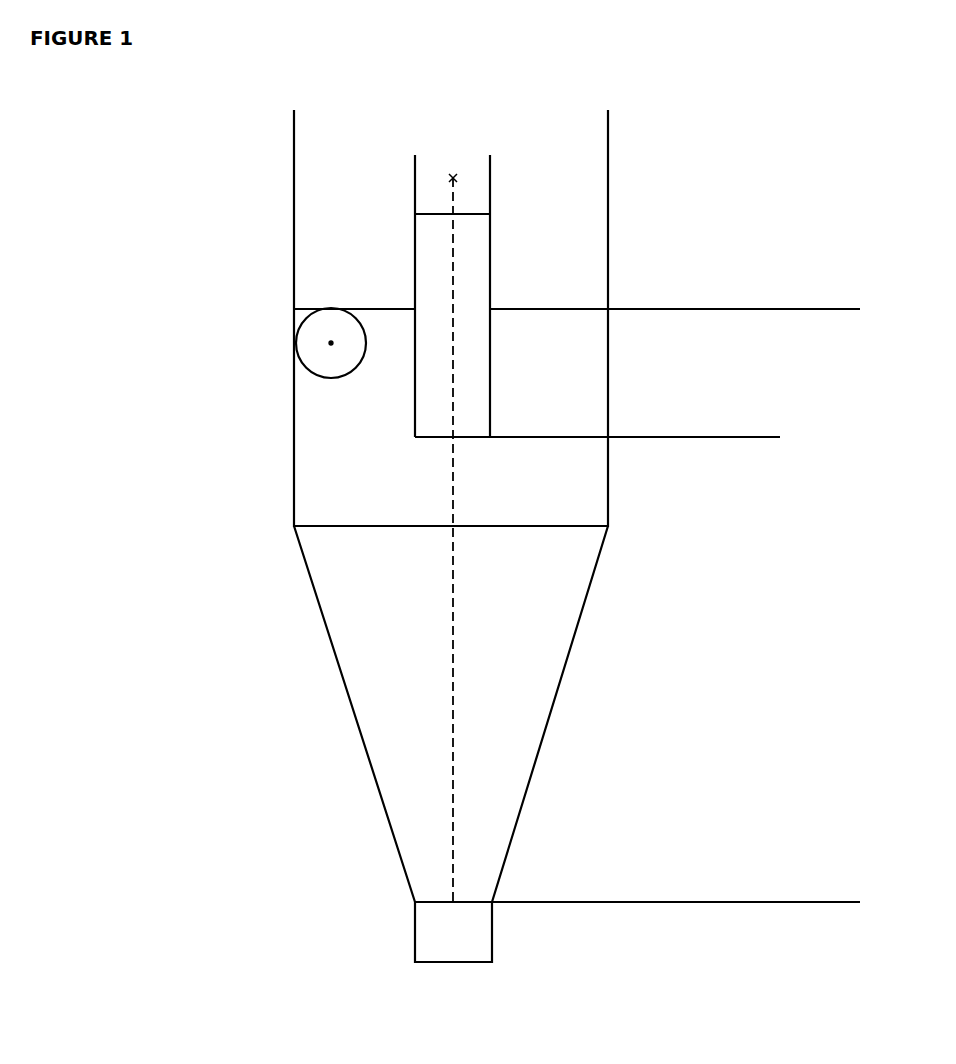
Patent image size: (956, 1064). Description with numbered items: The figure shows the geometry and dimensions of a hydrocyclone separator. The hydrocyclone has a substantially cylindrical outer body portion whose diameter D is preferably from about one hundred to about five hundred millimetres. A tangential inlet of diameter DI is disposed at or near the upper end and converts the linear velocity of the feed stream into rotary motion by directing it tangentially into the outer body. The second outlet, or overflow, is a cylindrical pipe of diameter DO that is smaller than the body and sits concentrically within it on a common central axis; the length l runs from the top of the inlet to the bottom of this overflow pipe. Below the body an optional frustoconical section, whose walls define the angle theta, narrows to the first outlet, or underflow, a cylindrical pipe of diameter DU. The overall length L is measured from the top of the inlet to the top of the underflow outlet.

The diameter of the outer body portion D is at (294, 110).
The diameter of the second outlet (overflow) DO is at (490, 155).
The diameter of the inlet DI is at (318, 340).
The length from top of inlet to bottom of second outlet l is at (780, 309).
The length from top of inlet to top of first outlet L is at (860, 902).
The angle defined by the walls of the frustoconical section theta is at (348, 657).
The diameter of the first outlet (underflow) DU is at (415, 962).